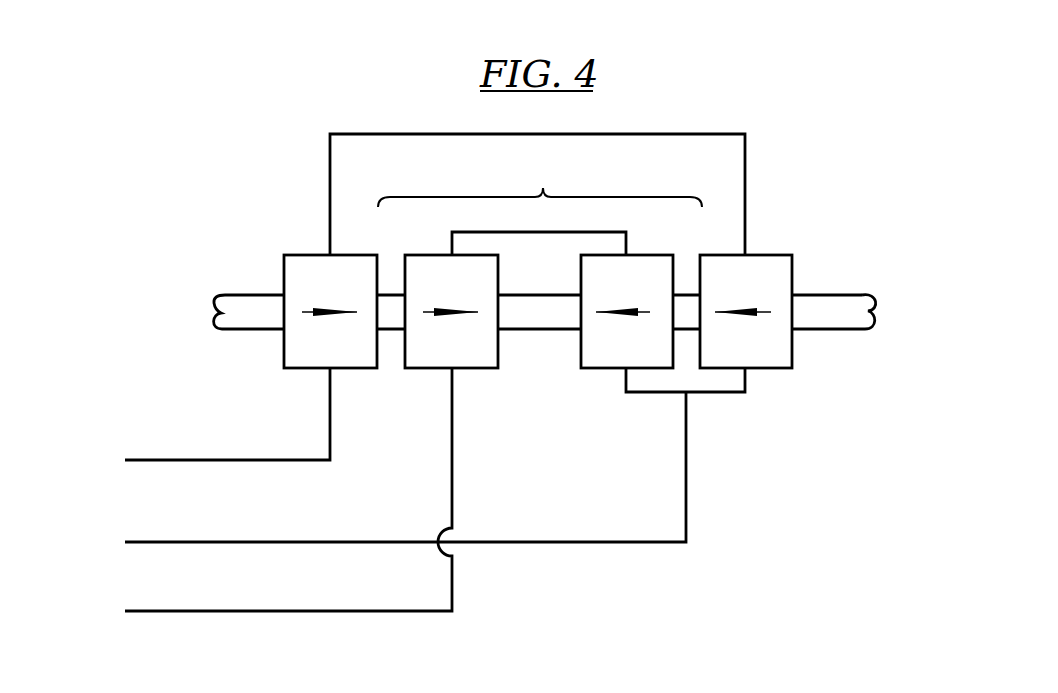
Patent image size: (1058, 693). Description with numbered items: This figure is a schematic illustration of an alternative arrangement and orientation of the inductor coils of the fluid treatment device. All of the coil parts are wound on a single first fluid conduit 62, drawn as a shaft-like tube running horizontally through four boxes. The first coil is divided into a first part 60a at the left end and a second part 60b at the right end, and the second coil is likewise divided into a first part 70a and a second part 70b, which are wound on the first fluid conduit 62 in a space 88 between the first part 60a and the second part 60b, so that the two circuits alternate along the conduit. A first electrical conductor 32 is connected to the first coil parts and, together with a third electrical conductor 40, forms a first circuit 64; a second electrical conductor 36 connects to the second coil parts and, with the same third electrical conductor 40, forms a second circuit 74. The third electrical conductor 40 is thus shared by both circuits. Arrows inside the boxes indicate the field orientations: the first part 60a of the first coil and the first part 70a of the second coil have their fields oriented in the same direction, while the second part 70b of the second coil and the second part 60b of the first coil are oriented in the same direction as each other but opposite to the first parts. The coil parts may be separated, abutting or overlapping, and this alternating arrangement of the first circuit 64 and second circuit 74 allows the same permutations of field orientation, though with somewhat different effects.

The first fluid conduit 62 is at (248, 294).
The first part of the first coil 60a is at (290, 368).
The second part of the first coil 60b is at (768, 369).
The first part of the second coil 70a is at (422, 369).
The second part of the second coil 70b is at (607, 369).
The space 88 is at (540, 185).
The first electrical conductor 32 is at (187, 460).
The third electrical conductor 40 is at (563, 542).
The second electrical conductor 36 is at (353, 612).
The first circuit 64 is at (137, 500).
The second circuit 74 is at (137, 633).